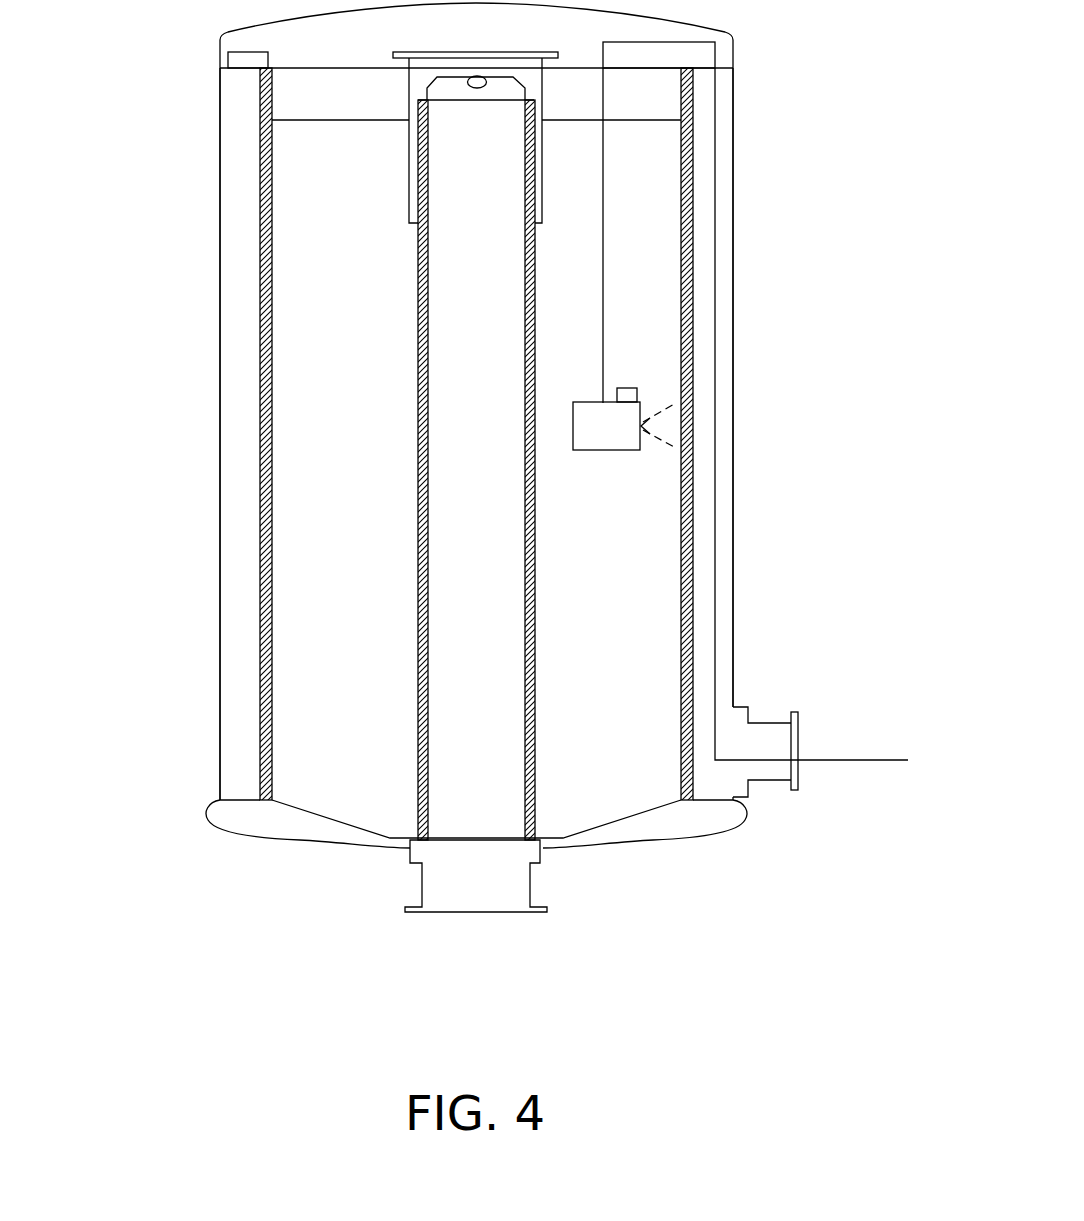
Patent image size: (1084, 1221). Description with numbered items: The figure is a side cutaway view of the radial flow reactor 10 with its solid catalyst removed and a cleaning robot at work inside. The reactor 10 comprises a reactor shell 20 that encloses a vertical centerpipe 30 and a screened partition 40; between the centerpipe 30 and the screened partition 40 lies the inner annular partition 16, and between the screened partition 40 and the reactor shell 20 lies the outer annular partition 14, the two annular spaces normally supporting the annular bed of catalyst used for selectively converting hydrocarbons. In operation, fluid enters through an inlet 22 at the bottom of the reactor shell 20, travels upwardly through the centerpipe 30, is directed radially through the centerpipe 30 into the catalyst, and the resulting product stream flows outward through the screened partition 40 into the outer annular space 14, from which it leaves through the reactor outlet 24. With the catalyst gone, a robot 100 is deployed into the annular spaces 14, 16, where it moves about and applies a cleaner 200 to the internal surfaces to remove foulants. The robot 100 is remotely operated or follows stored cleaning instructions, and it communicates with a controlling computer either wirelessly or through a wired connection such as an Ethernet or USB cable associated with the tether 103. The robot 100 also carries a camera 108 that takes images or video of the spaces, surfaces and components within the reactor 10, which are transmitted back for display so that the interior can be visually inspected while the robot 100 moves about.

The radial flow reactor 10 is at (160, 738).
The outer annular partition 14 is at (228, 163).
The inner annular partition 16 is at (627, 310).
The reactor shell 20 is at (219, 290).
The inlet 22 is at (500, 912).
The reactor outlet 24 is at (772, 722).
The centerpipe 30 is at (428, 285).
The screened partition 40 is at (260, 412).
The robot 100 is at (625, 450).
The tether 103 is at (603, 302).
The camera 108 is at (645, 395).
The cleaner 200 is at (670, 440).